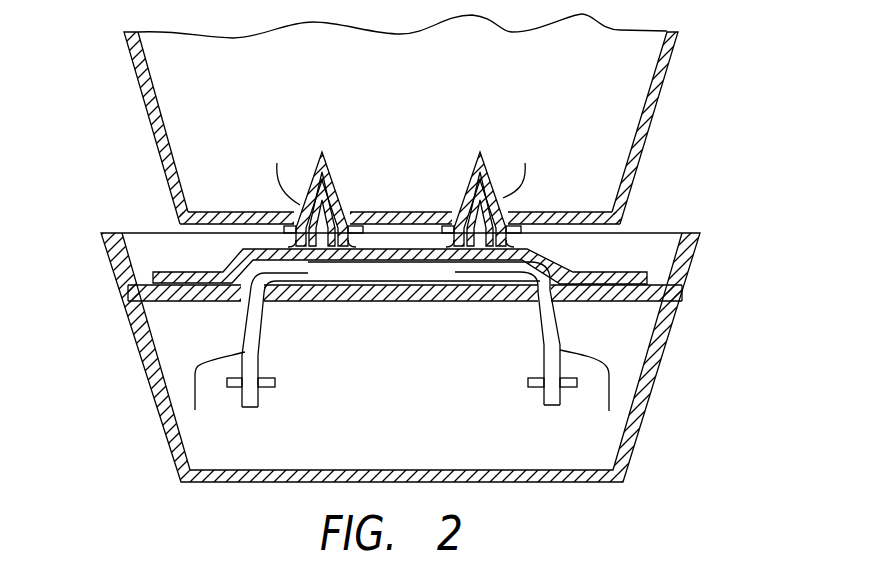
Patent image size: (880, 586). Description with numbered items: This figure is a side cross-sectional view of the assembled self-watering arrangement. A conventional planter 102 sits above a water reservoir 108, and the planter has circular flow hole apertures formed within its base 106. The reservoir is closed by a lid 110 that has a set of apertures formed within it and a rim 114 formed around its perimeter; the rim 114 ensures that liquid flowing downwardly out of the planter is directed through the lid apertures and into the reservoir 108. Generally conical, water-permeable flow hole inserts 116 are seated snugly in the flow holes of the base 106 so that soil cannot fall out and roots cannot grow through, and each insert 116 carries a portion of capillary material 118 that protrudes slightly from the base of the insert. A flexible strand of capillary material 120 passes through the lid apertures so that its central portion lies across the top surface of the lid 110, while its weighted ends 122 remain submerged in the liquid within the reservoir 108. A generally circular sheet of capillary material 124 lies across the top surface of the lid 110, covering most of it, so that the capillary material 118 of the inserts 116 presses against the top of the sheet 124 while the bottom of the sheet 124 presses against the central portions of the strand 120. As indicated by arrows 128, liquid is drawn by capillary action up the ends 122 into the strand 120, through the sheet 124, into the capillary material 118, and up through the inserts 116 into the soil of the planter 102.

The planter 102 is at (657, 92).
The base 106 is at (572, 212).
The water reservoir 108 is at (633, 443).
The lid 110 is at (392, 302).
The rim 114 is at (110, 240).
The flow hole insert 116 is at (330, 175).
The capillary material 118 is at (330, 207).
The strand of capillary material 120 is at (308, 262).
The ends of capillary material 122 is at (278, 400).
The sheet of capillary material 124 is at (167, 289).
The arrows 128 is at (195, 391).